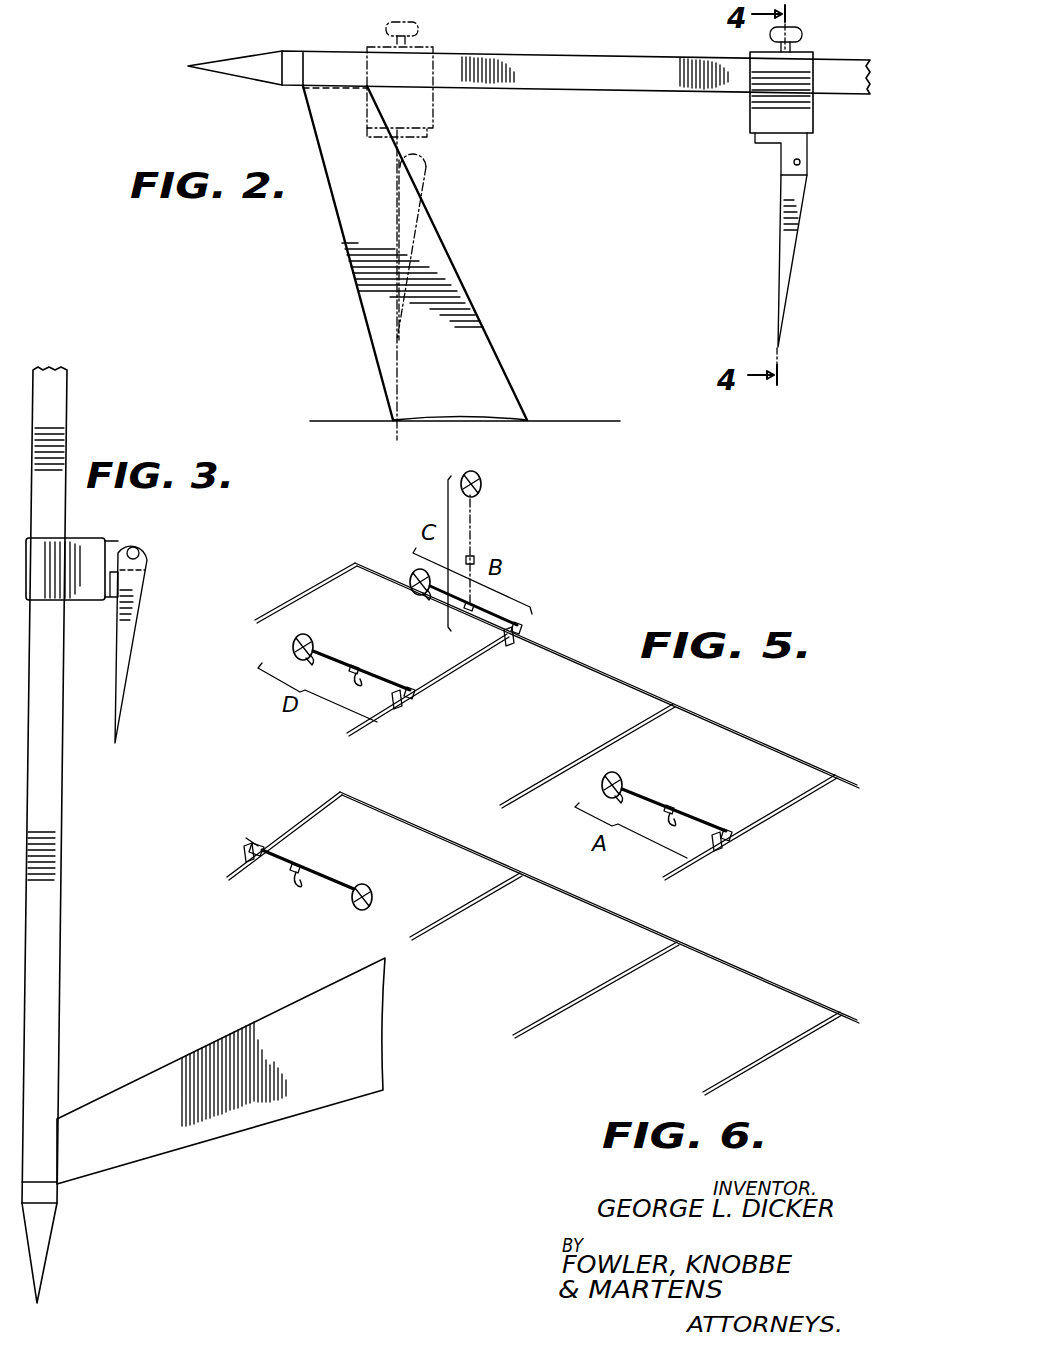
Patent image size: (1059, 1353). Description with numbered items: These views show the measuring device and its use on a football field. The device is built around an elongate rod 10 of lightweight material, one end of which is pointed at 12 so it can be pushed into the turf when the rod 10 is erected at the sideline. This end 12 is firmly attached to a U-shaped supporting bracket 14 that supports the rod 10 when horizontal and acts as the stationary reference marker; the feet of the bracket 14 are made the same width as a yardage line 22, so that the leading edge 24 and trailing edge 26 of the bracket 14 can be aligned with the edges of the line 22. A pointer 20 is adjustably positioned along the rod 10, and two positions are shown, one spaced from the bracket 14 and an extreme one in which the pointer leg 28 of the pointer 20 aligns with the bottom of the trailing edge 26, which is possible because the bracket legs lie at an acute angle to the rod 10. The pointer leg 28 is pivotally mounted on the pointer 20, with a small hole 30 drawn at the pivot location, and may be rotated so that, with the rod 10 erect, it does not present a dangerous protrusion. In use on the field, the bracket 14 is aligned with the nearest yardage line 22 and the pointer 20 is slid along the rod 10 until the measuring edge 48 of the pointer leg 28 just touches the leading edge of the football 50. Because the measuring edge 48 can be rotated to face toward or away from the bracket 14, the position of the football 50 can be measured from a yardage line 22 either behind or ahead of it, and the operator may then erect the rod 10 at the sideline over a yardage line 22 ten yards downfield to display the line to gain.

In FIG. 2, the elongate rod 10 is at (521, 51).
In FIG. 3, the elongate rod 10 is at (55, 828).
In FIG. 5, the elongate rod 10 is at (645, 795).
In FIG. 6, the elongate rod 10 is at (310, 876).
In FIG. 2, the pointed end 12 is at (240, 52).
In FIG. 3, the pointed end 12 is at (52, 1225).
In FIG. 2, the U-shaped supporting bracket 14 is at (340, 230).
In FIG. 3, the U-shaped supporting bracket 14 is at (218, 1040).
In FIG. 5, the U-shaped supporting bracket 14 is at (716, 852).
In FIG. 6, the U-shaped supporting bracket 14 is at (246, 855).
In FIG. 2, the pointer 20 is at (456, 25).
In FIG. 3, the pointer 20 is at (122, 528).
In FIG. 5, the pointer 20 is at (672, 805).
In FIG. 6, the pointer 20 is at (295, 868).
In FIG. 5, the yardage line 22 is at (451, 680).
In FIG. 6, the yardage line 22 is at (325, 824).
In FIG. 2, the leading edge 24 is at (505, 364).
In FIG. 2, the trailing edge 26 is at (377, 363).
In FIG. 2, the pointer leg 28 is at (421, 247).
In FIG. 3, the pointer leg 28 is at (130, 652).
In FIG. 2, the hole 30 is at (800, 162).
In FIG. 3, the hole 30 is at (139, 553).
In FIG. 2, the measuring edge 48 is at (397, 212).
In FIG. 5, the football 50 is at (372, 698).
In FIG. 6, the football 50 is at (298, 888).